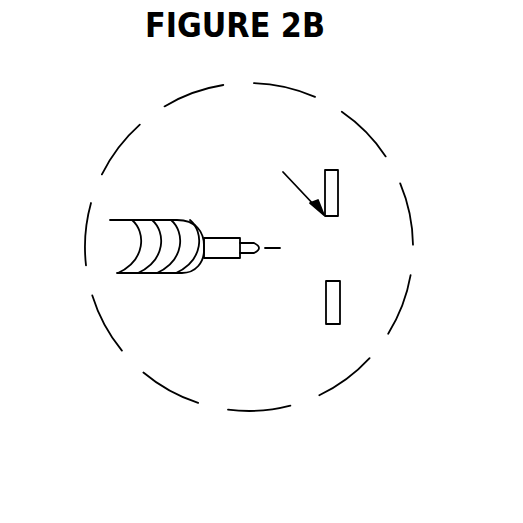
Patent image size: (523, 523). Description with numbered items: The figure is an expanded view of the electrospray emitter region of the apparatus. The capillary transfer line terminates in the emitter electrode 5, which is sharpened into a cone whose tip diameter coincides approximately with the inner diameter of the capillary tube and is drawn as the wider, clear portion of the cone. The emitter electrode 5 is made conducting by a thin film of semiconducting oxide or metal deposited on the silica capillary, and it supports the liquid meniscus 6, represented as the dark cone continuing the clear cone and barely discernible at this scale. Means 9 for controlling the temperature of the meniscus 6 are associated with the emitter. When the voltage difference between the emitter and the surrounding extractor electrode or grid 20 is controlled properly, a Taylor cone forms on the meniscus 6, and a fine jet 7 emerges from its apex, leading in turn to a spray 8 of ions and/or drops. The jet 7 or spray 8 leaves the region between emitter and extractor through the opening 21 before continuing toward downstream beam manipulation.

The emitter electrode 5 is at (243, 237).
The liquid meniscus 6 is at (265, 242).
The fine jet 7 is at (270, 255).
The spray 8 is at (350, 228).
The means for controlling the temperature 9 is at (142, 220).
The extractor electrode 20 is at (324, 171).
The opening 21 is at (289, 184).